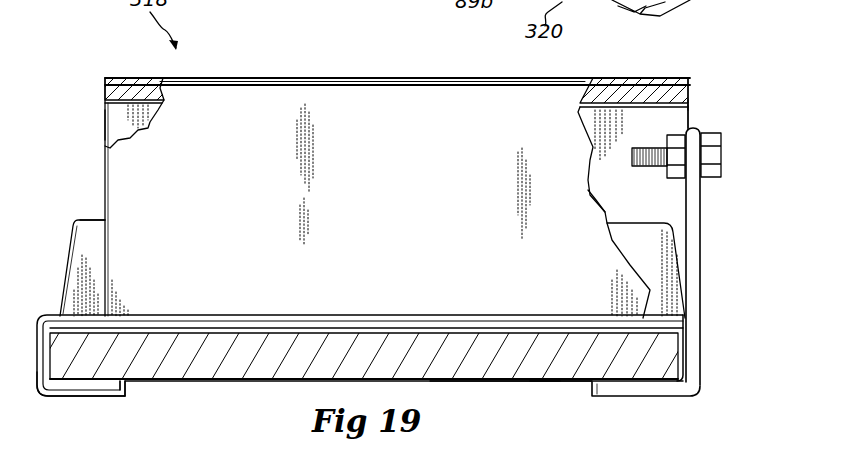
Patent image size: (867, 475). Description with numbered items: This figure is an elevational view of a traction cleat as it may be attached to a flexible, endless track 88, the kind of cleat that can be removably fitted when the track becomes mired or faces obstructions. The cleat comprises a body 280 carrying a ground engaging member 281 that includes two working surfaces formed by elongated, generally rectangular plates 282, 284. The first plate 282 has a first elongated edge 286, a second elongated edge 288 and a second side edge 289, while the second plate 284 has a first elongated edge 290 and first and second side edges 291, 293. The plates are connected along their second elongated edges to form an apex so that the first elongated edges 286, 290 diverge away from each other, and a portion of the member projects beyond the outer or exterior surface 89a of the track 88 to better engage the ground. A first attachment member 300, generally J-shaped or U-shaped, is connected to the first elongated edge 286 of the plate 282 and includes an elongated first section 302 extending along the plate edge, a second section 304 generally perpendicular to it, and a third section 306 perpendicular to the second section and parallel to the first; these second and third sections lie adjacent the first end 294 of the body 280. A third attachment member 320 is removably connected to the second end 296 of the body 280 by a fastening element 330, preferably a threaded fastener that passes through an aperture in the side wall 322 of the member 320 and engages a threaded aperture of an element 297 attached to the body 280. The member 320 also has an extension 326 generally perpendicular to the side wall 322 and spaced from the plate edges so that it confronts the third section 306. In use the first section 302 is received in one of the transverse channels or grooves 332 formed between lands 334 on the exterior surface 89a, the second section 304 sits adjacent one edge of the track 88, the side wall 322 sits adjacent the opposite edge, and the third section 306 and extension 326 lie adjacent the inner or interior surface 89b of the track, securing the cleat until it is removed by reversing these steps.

The body 280 is at (278, 78).
The ground engaging member 281 is at (222, 78).
The first elongated edge 286 is at (323, 80).
The second side edge 293 is at (104, 104).
The first end 294 is at (100, 124).
The second side edge 289 is at (105, 152).
The plate 282 is at (278, 198).
The first elongated edge 290 is at (672, 78).
The first side edge 291 is at (696, 113).
The second end 296 is at (714, 110).
The plate 284 is at (645, 191).
The outer or exterior surface 89a is at (613, 222).
The element 297 is at (673, 178).
The fastening element 330 is at (722, 158).
The third attachment member 320 is at (657, 281).
The side wall 322 is at (700, 238).
The extension 326 is at (626, 398).
The first attachment member 300 is at (367, 378).
The first section 302 is at (262, 325).
The second elongated edge 288 is at (503, 318).
The second section 304 is at (37, 372).
The third section 306 is at (125, 390).
The channels or grooves 332 is at (90, 248).
The lands 334 is at (90, 219).
The flexible, endless track 88 is at (462, 392).
The inner or interior surface 89b is at (553, 386).